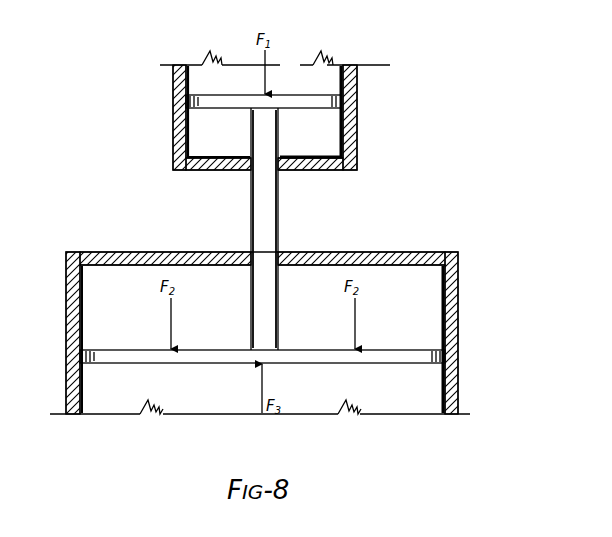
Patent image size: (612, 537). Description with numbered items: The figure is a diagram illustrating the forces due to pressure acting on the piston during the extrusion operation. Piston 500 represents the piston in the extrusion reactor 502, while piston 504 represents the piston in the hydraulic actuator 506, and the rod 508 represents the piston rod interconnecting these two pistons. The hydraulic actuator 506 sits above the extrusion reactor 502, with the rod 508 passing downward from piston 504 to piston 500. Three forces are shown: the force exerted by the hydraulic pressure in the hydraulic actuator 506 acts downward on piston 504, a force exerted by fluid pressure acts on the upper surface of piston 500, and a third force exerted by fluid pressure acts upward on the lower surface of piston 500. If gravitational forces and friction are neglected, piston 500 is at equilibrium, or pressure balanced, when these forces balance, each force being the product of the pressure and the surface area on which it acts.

The piston 500 is at (330, 364).
The extrusion reactor 502 is at (458, 318).
The piston 504 is at (290, 95).
The hydraulic actuator 506 is at (357, 100).
The piston rod 508 is at (278, 207).